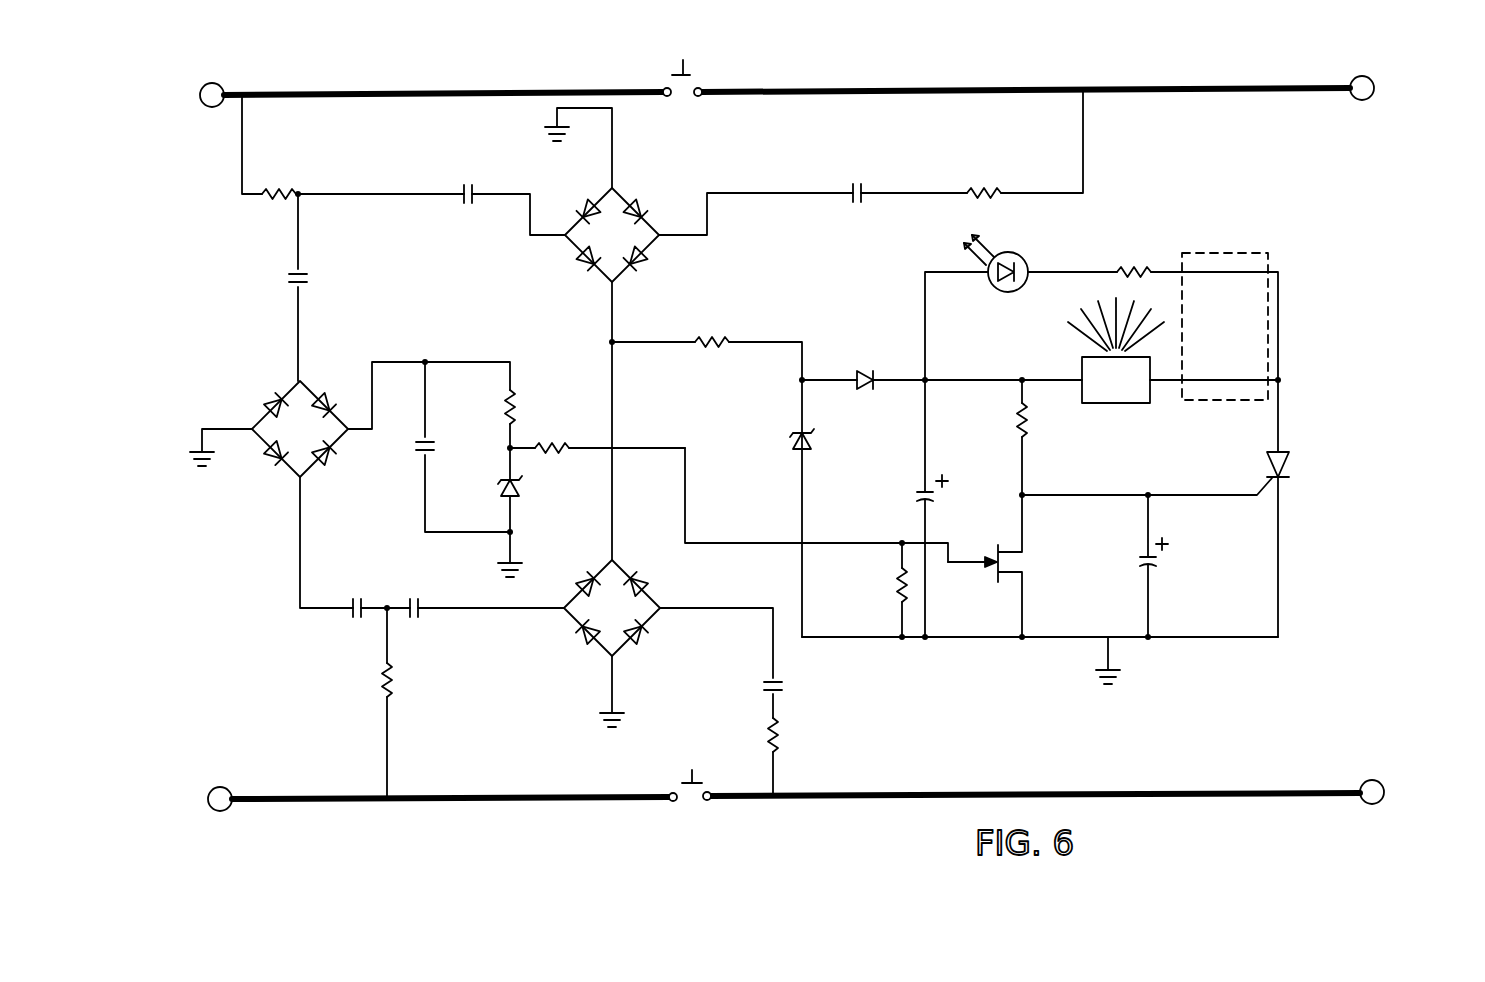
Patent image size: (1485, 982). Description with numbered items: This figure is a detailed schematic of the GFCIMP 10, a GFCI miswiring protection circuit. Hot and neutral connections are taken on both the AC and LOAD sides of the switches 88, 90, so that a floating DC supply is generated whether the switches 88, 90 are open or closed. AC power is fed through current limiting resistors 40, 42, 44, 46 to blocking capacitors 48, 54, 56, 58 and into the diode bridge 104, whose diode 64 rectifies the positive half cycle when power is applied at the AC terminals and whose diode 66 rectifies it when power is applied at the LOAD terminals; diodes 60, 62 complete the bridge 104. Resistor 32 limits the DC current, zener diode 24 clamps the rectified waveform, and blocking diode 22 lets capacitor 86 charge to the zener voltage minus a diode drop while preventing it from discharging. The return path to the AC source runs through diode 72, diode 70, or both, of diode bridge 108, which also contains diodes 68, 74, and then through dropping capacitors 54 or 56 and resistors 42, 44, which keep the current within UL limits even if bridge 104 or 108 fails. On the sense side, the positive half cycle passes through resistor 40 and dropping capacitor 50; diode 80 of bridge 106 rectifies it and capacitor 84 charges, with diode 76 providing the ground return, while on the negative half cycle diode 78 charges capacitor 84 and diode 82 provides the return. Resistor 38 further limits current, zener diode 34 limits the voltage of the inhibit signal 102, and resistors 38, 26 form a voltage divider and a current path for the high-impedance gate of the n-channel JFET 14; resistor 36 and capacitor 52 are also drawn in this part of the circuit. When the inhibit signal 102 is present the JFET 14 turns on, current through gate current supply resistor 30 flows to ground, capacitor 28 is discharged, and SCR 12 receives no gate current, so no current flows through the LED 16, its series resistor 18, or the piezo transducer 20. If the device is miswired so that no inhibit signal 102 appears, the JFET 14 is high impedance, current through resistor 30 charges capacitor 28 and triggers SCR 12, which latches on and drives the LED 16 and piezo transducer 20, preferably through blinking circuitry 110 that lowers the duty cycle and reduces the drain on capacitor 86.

The GFCIMP device 10 is at (1038, 74).
The SCR 12 is at (1268, 460).
The n-channel JFET 14 is at (994, 556).
The LED 16 is at (1024, 268).
The resistor 18 is at (1146, 270).
The piezo transducer 20 is at (1116, 350).
The blocking diode 22 is at (860, 388).
The zener diode 24 is at (790, 440).
The resistor 26 is at (896, 590).
The capacitor 28 is at (1156, 566).
The gate current supply resistor 30 is at (1026, 420).
The resistor 32 is at (728, 340).
The zener diode 34 is at (520, 500).
The resistor 36 is at (518, 404).
The resistor 38 is at (544, 452).
The current limiting resistor 40 is at (288, 190).
The current limiting resistor 42 is at (396, 678).
The current limiting resistor 44 is at (782, 728).
The current limiting resistor 46 is at (998, 190).
The blocking capacitor 48 is at (474, 200).
The dropping capacitor 50 is at (304, 284).
The capacitor 52 is at (362, 600).
The dropping capacitor 54 is at (419, 602).
The dropping capacitor 56 is at (780, 682).
The blocking capacitor 58 is at (862, 190).
The diode 60 is at (642, 204).
The diode 62 is at (584, 200).
The diode 64 is at (583, 263).
The diode 66 is at (645, 260).
The diode 68 is at (642, 578).
The diode 70 is at (664, 620).
The diode 72 is at (590, 640).
The diode 74 is at (580, 574).
The diode 76 is at (274, 462).
The diode 78 is at (330, 456).
The diode 80 is at (330, 400).
The diode 82 is at (264, 394).
The capacitor 84 is at (440, 448).
The capacitor 86 is at (940, 498).
The switch 88 is at (690, 75).
The switch 90 is at (702, 783).
The inhibit signal 102 is at (738, 514).
The diode bridge 104 is at (643, 231).
The bridge 106 is at (287, 452).
The diode bridge 108 is at (632, 609).
The blinking circuitry 110 is at (1220, 252).